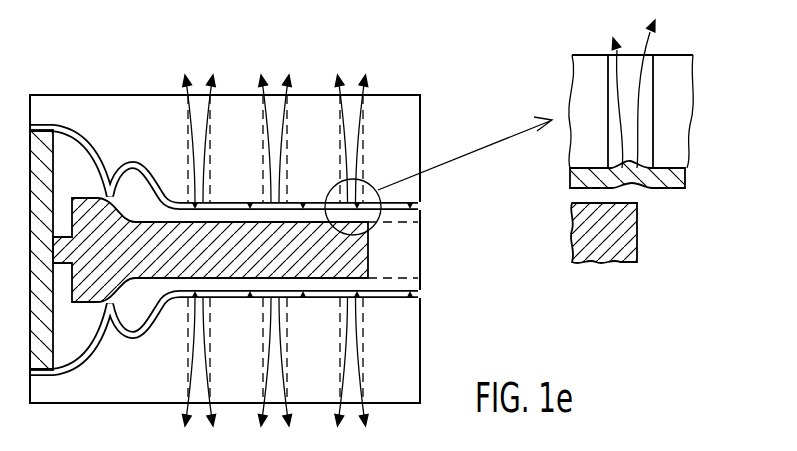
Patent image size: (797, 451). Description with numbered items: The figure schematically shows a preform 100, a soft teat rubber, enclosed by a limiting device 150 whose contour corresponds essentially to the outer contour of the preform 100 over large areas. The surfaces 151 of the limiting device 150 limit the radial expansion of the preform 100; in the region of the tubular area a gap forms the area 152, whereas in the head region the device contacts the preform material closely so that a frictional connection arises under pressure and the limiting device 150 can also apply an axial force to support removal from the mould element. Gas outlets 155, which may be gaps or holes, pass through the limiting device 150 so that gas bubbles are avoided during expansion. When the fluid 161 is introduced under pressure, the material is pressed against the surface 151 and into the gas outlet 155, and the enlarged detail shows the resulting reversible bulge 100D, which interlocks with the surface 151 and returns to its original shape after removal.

The preform 100 is at (429, 247).
The bulge 100D is at (652, 168).
The limiting device 150 is at (452, 80).
The surfaces for limiting the radial expansion 151 is at (398, 202).
The area 152 is at (402, 290).
The gas outlets 155 is at (193, 84).
The fluid 161 is at (654, 198).